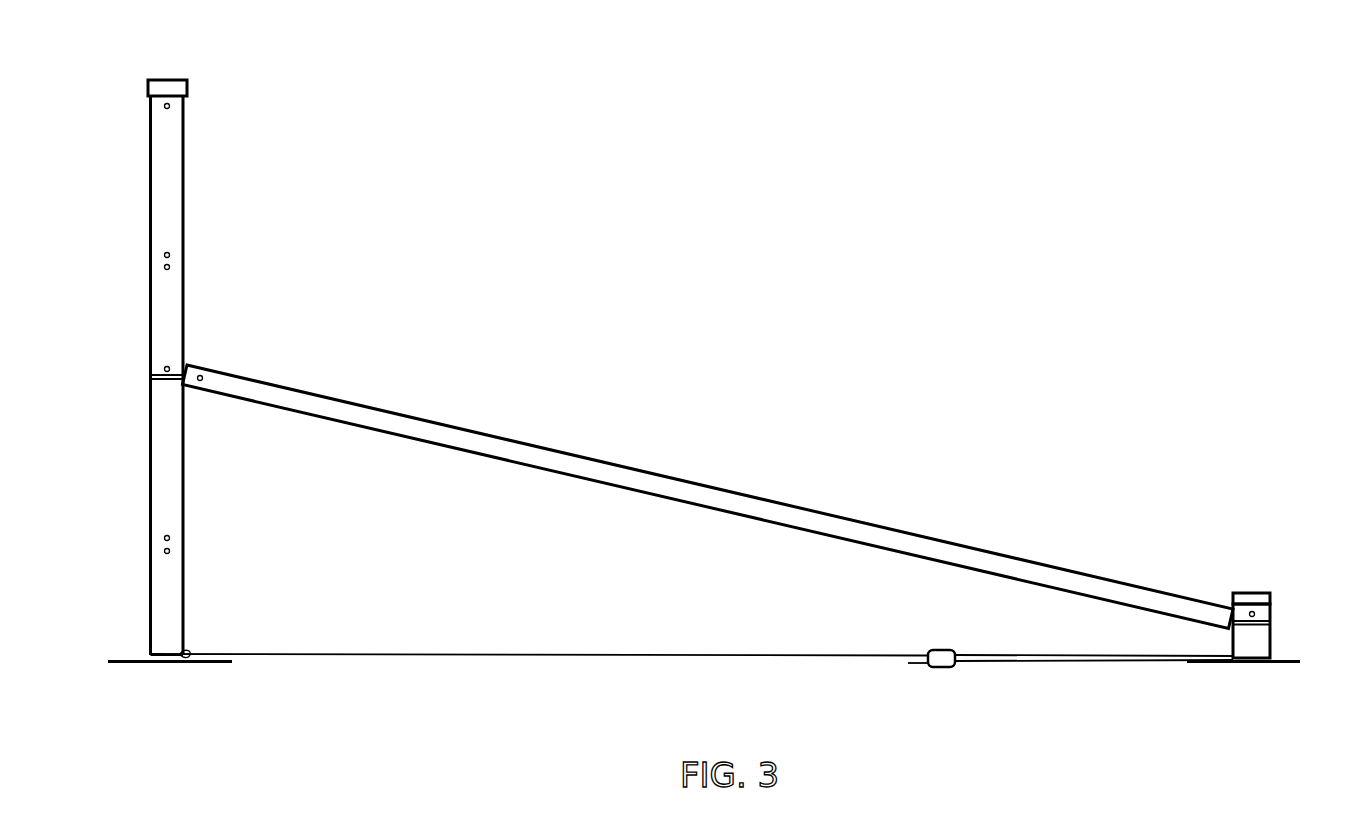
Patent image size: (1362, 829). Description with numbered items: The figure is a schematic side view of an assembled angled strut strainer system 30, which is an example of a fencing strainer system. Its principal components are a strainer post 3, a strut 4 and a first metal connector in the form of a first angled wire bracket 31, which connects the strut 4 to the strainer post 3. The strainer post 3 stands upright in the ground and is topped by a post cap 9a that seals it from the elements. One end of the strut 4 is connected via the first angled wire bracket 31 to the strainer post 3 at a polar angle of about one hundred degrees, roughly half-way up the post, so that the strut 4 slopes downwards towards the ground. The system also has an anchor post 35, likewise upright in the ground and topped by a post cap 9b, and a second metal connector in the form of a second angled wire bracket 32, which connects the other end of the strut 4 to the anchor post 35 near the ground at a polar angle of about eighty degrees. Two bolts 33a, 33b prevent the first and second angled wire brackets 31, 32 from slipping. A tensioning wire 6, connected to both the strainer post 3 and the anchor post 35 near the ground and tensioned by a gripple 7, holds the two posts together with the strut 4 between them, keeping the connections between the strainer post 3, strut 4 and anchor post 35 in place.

The strainer post 3 is at (167, 427).
The post cap 9a is at (168, 80).
The first angled wire bracket 31 is at (148, 375).
The bolt 33a is at (170, 367).
The strut 4 is at (651, 473).
The second angled wire bracket 32 is at (1270, 620).
The post cap 9b is at (1247, 593).
The bolt 33b is at (1254, 613).
The anchor post 35 is at (1253, 640).
The tensioning wire 6 is at (807, 657).
The gripple 7 is at (945, 668).
The angled strut strainer system 30 is at (920, 270).